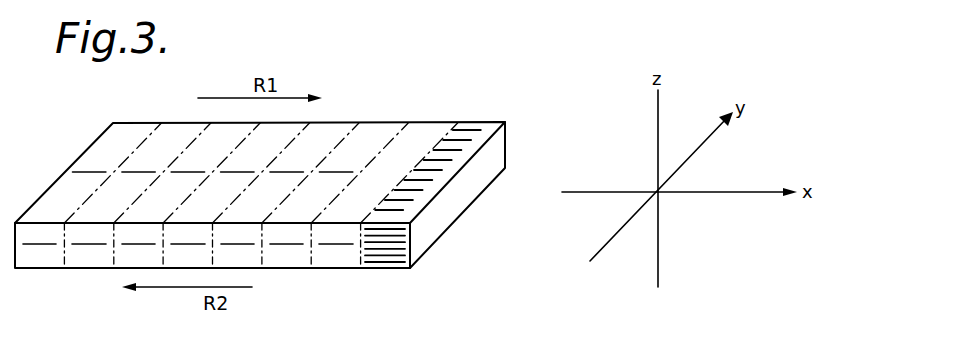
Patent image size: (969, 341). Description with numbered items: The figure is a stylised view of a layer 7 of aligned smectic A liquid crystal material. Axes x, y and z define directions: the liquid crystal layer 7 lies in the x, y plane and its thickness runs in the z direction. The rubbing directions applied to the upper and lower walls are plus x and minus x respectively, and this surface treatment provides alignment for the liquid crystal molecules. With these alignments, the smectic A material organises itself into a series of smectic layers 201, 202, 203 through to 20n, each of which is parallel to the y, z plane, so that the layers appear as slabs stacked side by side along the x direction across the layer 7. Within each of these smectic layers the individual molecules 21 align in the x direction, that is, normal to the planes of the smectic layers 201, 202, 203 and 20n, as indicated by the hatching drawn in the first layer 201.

The layer 7 is at (421, 231).
The layer 20n is at (130, 132).
The layer 203 is at (387, 130).
The layer 202 is at (423, 130).
The layer 201 is at (483, 132).
The molecules 21 is at (487, 128).